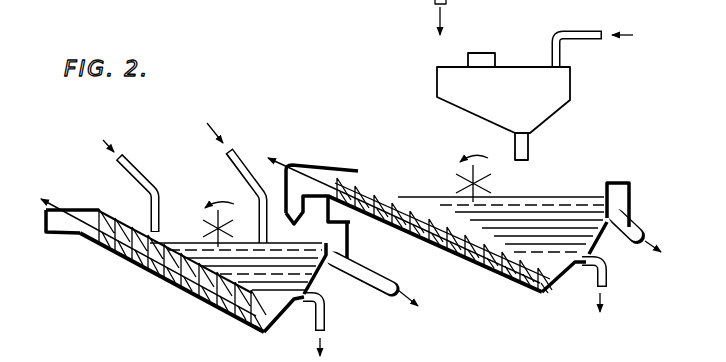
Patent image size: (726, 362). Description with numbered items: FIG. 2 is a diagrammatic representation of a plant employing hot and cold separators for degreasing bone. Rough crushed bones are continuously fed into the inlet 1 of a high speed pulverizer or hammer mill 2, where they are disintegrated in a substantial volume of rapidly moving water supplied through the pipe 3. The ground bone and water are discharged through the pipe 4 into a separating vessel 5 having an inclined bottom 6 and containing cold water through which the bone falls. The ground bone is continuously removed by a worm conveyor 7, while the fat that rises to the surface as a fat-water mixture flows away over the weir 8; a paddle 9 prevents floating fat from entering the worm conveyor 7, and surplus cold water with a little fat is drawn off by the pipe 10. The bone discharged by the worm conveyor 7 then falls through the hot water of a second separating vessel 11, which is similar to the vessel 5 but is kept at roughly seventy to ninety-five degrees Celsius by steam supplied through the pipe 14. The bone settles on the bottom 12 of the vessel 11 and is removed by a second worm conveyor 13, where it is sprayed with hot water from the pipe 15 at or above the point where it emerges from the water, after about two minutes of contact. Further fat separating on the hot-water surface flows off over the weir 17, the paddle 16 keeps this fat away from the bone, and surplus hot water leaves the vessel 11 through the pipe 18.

The inlet 1 is at (477, 56).
The hammer mill 2 is at (558, 86).
The pipe 3 is at (581, 31).
The pipe 4 is at (529, 147).
The separating vessel 5 is at (547, 212).
The inclined bottom 6 is at (456, 261).
The worm conveyor 7 is at (425, 229).
The weir 8 is at (609, 211).
The paddle 9 is at (486, 179).
The pipe 10 is at (607, 272).
The second separating vessel 11 is at (288, 272).
The bottom 12 is at (199, 295).
The worm conveyor 13 is at (150, 272).
The pipe 14 is at (244, 173).
The pipe 15 is at (140, 173).
The paddle 16 is at (209, 226).
The weir 17 is at (338, 243).
The pipe 18 is at (325, 313).